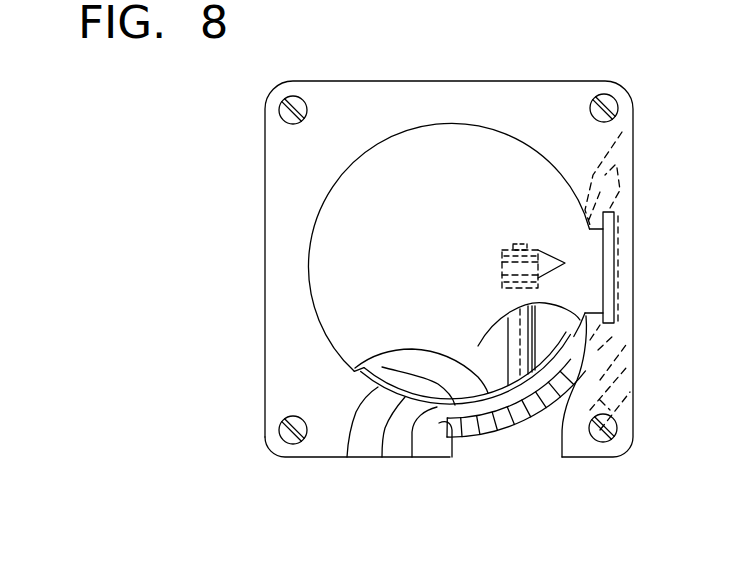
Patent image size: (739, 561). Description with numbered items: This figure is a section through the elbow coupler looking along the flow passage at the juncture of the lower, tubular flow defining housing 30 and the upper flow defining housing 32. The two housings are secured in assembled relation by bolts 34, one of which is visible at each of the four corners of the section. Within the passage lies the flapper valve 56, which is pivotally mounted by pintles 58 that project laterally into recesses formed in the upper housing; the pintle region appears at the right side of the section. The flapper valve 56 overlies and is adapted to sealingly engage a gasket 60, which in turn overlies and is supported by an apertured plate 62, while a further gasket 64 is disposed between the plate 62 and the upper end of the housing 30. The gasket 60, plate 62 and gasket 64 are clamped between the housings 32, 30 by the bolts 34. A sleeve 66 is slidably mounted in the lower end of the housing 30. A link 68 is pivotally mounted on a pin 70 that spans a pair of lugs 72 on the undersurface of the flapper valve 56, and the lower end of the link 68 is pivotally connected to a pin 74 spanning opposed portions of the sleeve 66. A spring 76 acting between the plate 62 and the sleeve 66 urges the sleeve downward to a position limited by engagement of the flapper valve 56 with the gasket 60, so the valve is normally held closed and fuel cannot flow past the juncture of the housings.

The lower flow defining housing 30 is at (484, 440).
The upper flow defining housing 32 is at (620, 183).
The bolts 34 is at (283, 121).
The flapper valve 56 is at (357, 262).
The pintles 58 is at (618, 323).
The gasket 60 is at (313, 392).
The apertured plate 62 is at (365, 437).
The further gasket 64 is at (398, 438).
The sleeve 66 is at (457, 364).
The link 68 is at (497, 258).
The pin 70 is at (520, 243).
The lugs 72 is at (568, 262).
The pin 74 is at (508, 366).
The spring 76 is at (382, 367).